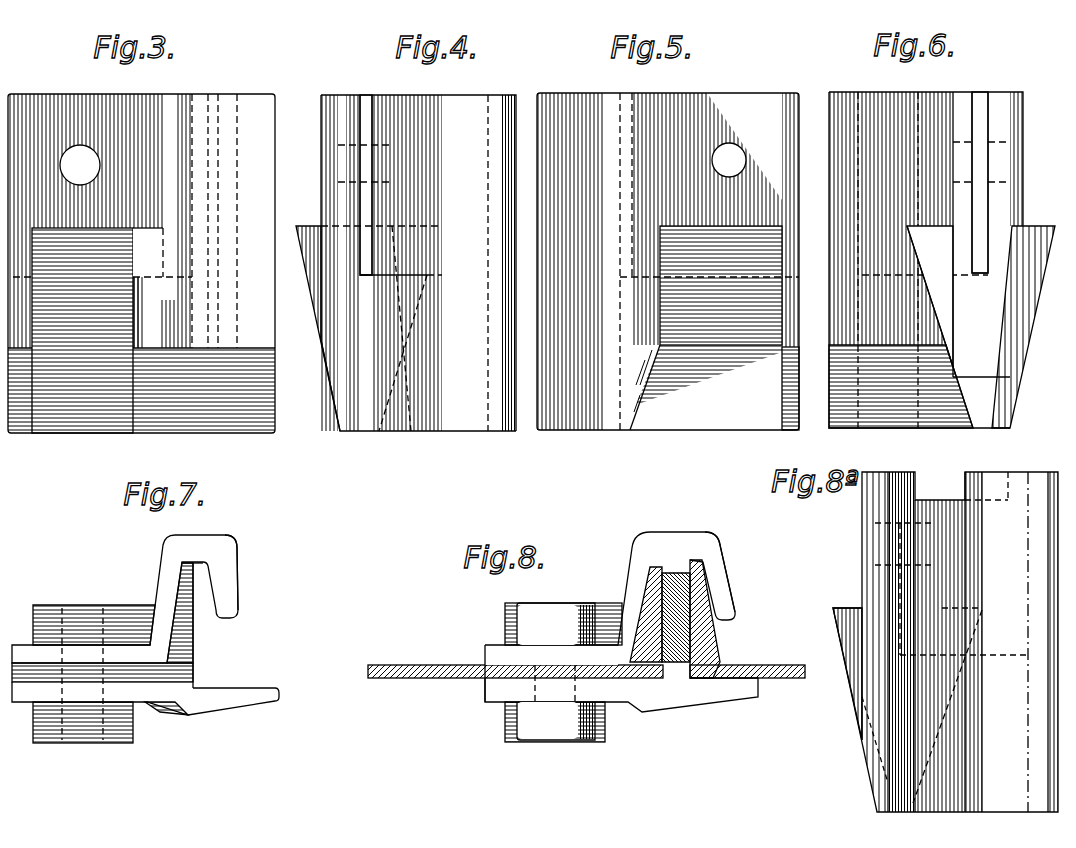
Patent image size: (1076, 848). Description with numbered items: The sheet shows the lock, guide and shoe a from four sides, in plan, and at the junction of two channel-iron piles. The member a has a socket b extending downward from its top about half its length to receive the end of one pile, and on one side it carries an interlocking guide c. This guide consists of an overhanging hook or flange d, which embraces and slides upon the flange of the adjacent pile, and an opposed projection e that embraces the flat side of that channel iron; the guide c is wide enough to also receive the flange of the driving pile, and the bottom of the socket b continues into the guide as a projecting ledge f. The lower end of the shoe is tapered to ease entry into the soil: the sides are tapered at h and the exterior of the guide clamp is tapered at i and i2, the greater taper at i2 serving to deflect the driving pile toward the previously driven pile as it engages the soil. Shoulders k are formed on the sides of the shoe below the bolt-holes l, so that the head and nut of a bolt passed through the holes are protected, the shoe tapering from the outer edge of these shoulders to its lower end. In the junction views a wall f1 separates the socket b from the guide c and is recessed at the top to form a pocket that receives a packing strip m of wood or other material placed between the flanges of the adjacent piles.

In FIG. 3, the lock, guide and shoe a is at (100, 207).
In FIG. 4, the lock, guide and shoe a is at (413, 171).
In FIG. 5, the lock, guide and shoe a is at (715, 205).
In FIG. 6, the lock, guide and shoe a is at (926, 246).
In FIG. 7, the lock, guide and shoe a is at (125, 637).
In FIG. 8, the lock, guide and shoe a is at (610, 617).
In FIG. 4, the socket b is at (367, 123).
In FIG. 6, the socket b is at (980, 108).
In FIG. 7, the socket b is at (128, 675).
In FIG. 8, the socket b is at (625, 678).
In FIG. 8A, the socket b is at (900, 595).
In FIG. 4, the interlocking guide c is at (402, 300).
In FIG. 5, the interlocking guide c is at (618, 261).
In FIG. 7, the interlocking guide c is at (193, 625).
In FIG. 8, the interlocking guide c is at (715, 619).
In FIG. 8A, the interlocking guide c is at (928, 695).
In FIG. 4, the overhanging hook or flange d is at (479, 263).
In FIG. 5, the overhanging hook or flange d is at (705, 185).
In FIG. 7, the overhanging hook or flange d is at (222, 578).
In FIG. 8, the overhanging hook or flange d is at (725, 590).
In FIG. 8A, the overhanging hook or flange d is at (1011, 642).
In FIG. 3, the projection e is at (233, 221).
In FIG. 4, the projection e is at (345, 251).
In FIG. 5, the projection e is at (551, 92).
In FIG. 7, the projection e is at (242, 693).
In FIG. 8, the projection e is at (725, 695).
In FIG. 8A, the projection e is at (882, 647).
In FIG. 4, the projecting ledge f is at (388, 278).
In FIG. 6, the projecting ledge f is at (982, 275).
In FIG. 7, the projecting ledge f is at (183, 617).
In FIG. 8A, the projecting ledge f is at (985, 660).
In FIG. 8, the wall f1 is at (673, 572).
In FIG. 8A, the wall f1 is at (940, 522).
In FIG. 3, the tapered sides of shoe h is at (277, 391).
In FIG. 4, the tapered sides of shoe h is at (330, 372).
In FIG. 5, the tapered sides of shoe h is at (790, 376).
In FIG. 6, the tapered sides of shoe h is at (848, 378).
In FIG. 5, the tapered exterior of guide clamp i is at (581, 410).
In FIG. 7, the tapered exterior of guide clamp i is at (62, 683).
In FIG. 5, the tapered surface i2 is at (646, 392).
In FIG. 3, the shoulders k is at (102, 222).
In FIG. 4, the shoulders k is at (306, 225).
In FIG. 5, the shoulders k is at (738, 230).
In FIG. 6, the shoulders k is at (933, 222).
In FIG. 7, the shoulders k is at (90, 617).
In FIG. 8, the shoulders k is at (513, 605).
In FIG. 8A, the shoulders k is at (843, 607).
In FIG. 3, the bolt-holes l is at (80, 165).
In FIG. 4, the bolt-holes l is at (338, 145).
In FIG. 5, the bolt-holes l is at (729, 160).
In FIG. 8, the packing strip m is at (715, 630).